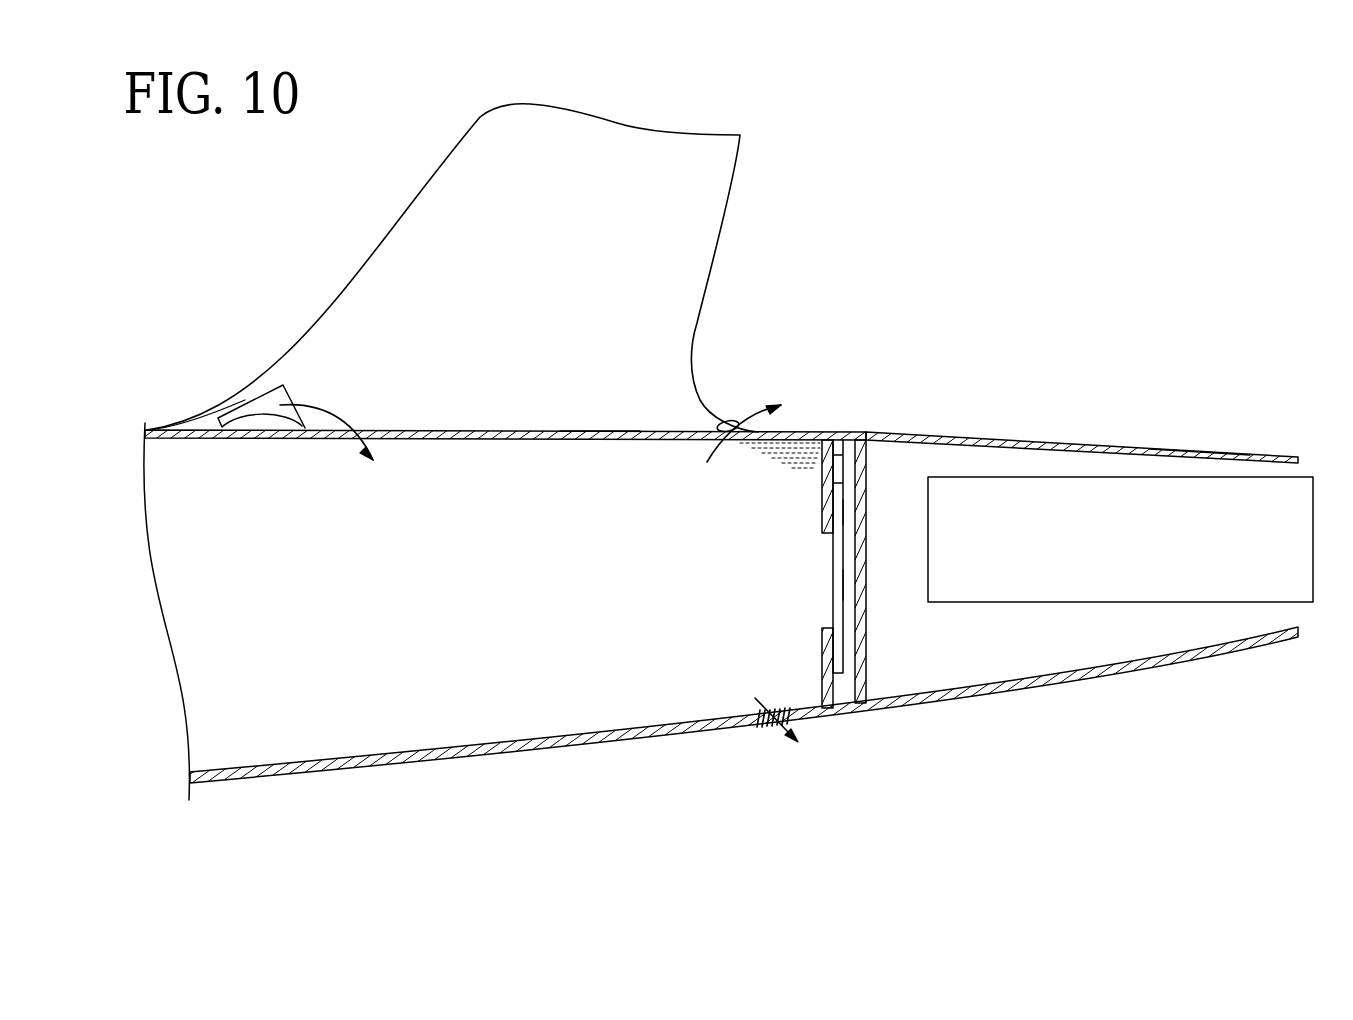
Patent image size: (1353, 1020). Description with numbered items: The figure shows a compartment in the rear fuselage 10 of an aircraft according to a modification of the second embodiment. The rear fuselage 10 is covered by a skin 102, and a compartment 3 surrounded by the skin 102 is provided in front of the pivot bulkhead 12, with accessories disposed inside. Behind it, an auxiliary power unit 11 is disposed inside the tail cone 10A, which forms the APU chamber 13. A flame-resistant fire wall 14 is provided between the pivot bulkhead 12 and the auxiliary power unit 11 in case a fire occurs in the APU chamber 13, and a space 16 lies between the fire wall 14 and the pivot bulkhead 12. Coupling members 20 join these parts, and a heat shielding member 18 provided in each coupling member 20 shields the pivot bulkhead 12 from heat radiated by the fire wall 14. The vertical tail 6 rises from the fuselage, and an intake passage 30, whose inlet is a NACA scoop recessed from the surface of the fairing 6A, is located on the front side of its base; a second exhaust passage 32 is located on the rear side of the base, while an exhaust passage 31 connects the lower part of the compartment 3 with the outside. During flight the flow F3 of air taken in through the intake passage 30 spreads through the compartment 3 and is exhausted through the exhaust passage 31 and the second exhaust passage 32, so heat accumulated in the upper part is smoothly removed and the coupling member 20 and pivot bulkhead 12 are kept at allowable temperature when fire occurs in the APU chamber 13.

The compartment 3 is at (452, 604).
The vertical tail 6 is at (730, 208).
The fairing 6A is at (265, 382).
The rear fuselage 10 is at (421, 428).
The skin 102 is at (598, 428).
The tail cone 10A is at (1102, 445).
The auxiliary power unit 11 is at (1198, 475).
The pivot bulkhead 12 is at (816, 500).
The APU chamber 13 is at (1094, 651).
The fire wall 14 is at (867, 612).
The space 16 is at (849, 467).
The heat shielding member 18 is at (846, 512).
The coupling member 20 is at (847, 583).
The intake passage 30 is at (240, 402).
The exhaust passage 31 is at (772, 728).
The second exhaust passage 32 is at (731, 420).
The flow of the air F3 is at (326, 441).